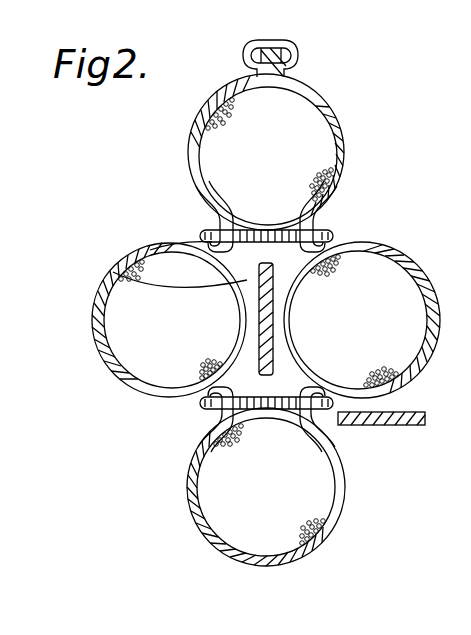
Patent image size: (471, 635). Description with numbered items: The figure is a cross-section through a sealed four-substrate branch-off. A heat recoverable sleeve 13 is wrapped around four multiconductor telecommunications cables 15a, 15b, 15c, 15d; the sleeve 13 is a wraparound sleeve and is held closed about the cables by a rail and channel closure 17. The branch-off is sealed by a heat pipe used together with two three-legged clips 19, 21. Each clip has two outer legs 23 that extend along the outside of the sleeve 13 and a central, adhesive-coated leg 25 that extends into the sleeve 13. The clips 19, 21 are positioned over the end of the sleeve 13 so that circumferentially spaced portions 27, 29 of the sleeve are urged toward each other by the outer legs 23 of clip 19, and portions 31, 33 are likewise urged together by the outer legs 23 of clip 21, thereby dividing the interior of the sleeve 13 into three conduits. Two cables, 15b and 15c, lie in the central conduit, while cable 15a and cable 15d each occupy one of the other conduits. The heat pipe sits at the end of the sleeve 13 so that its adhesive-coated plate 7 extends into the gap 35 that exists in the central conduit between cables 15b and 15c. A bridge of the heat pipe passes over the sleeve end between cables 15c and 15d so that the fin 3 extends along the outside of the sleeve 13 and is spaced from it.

The fin 3 is at (370, 425).
The adhesive-coated plate 7 is at (273, 310).
The heat recoverable sleeve 13 is at (320, 104).
The multiconductor telecommunications cable 15a is at (279, 137).
The multiconductor telecommunications cable 15b is at (195, 328).
The multiconductor telecommunications cable 15c is at (380, 326).
The multiconductor telecommunications cable 15d is at (288, 490).
The rail and channel closure 17 is at (268, 40).
The three-legged clip 19 is at (199, 233).
The three-legged clip 21 is at (194, 416).
The outer legs 23 is at (204, 230).
The adhesive-coated leg 25 is at (273, 229).
The circumferentially spaced portion of the sleeve 27 is at (136, 258).
The circumferentially spaced portion of the sleeve 29 is at (317, 243).
The circumferentially spaced portion of the sleeve 31 is at (152, 383).
The circumferentially spaced portion of the sleeve 33 is at (297, 416).
The gap 35 is at (133, 278).